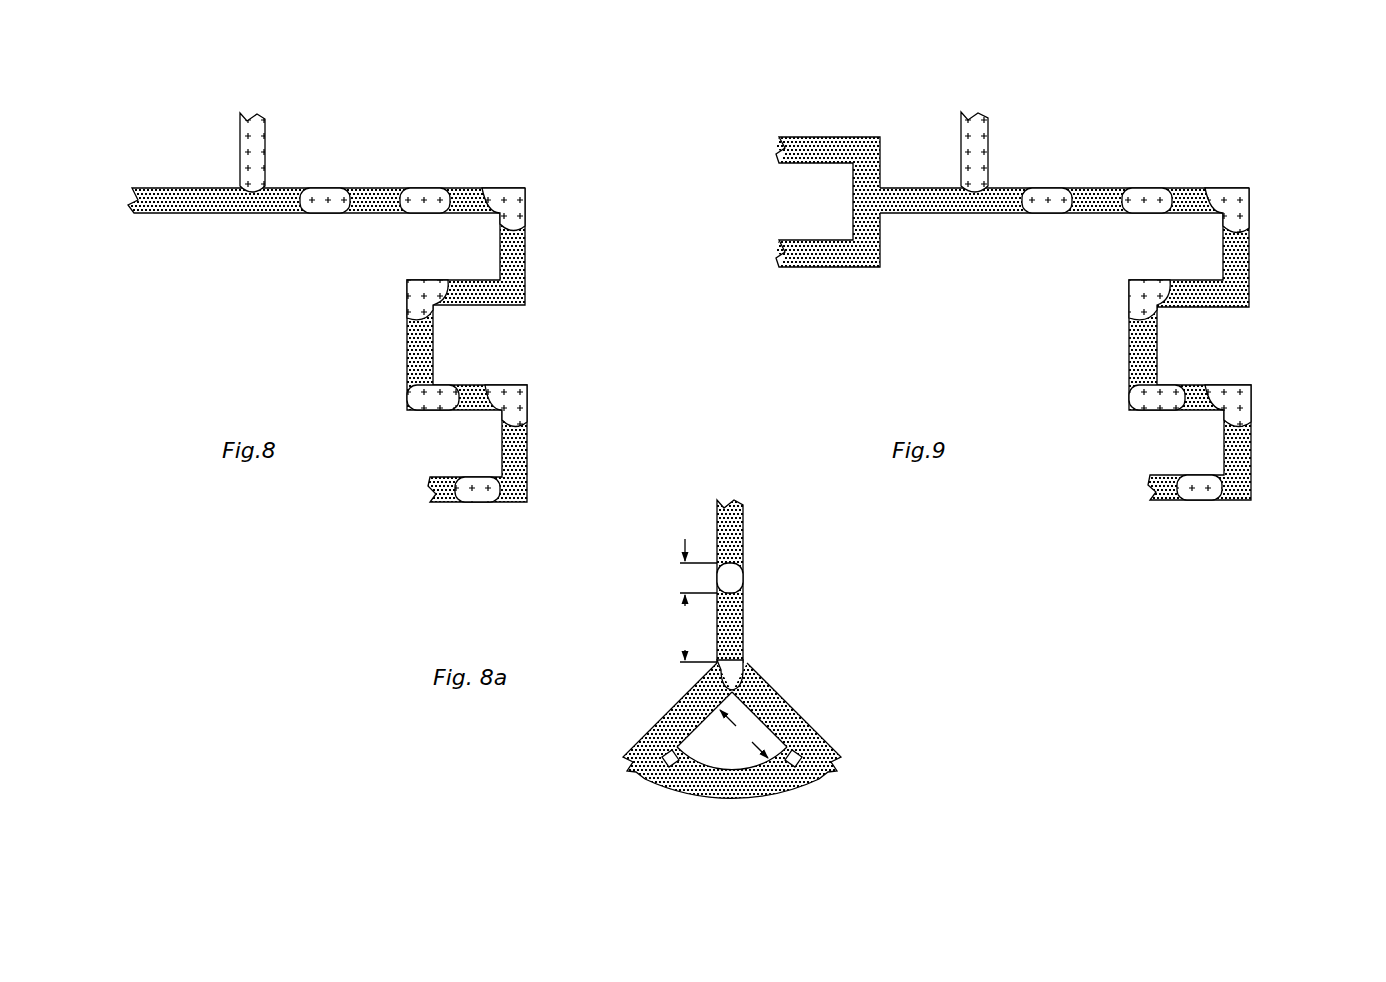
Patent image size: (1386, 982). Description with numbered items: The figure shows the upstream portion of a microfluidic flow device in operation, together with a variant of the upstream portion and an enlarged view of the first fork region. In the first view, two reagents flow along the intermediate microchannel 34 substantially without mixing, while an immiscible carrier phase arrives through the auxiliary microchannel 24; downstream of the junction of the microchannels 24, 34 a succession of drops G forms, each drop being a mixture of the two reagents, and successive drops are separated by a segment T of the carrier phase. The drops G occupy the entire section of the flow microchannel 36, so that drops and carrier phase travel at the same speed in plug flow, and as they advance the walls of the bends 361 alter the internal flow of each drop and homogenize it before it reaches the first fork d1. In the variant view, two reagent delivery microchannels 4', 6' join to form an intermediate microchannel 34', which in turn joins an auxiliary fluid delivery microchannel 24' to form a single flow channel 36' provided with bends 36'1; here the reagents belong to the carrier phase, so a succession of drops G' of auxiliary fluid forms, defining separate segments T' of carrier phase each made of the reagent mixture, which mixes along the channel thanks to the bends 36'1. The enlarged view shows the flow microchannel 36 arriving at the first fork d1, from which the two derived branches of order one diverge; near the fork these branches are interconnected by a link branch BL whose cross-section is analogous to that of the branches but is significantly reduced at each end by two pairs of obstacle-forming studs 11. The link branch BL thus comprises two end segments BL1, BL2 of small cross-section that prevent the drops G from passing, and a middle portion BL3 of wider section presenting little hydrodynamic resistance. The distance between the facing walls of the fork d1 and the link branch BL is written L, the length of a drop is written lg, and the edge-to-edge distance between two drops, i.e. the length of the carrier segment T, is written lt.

In FIG. 8, the auxiliary fluid delivery microchannel 24 is at (326, 237).
In FIG. 8, the intermediate microchannel 34 is at (286, 142).
In FIG. 8, the flow microchannel 36 is at (504, 323).
In FIG. 8A, the flow microchannel 36 is at (762, 580).
In FIG. 8, the bends of the flow microchannel 361 is at (529, 306).
In FIG. 8, the segment of carrier phase T is at (470, 295).
In FIG. 8, the drop G is at (443, 345).
In FIG. 8A, the drop G is at (730, 626).
In FIG. 9, the reagent delivery microchannel 4' is at (828, 101).
In FIG. 9, the reagent delivery microchannel 6' is at (828, 255).
In FIG. 9, the auxiliary fluid delivery microchannel 24' is at (1019, 141).
In FIG. 9, the intermediate microchannel 34' is at (1064, 227).
In FIG. 9, the flow channel 36' is at (1249, 344).
In FIG. 9, the bends of the flow channel 36'1 is at (1290, 421).
In FIG. 9, the drop G' is at (1136, 323).
In FIG. 9, the segment of carrier phase T' is at (1138, 298).
In FIG. 8A, the length of a drop lg is at (692, 572).
In FIG. 8A, the length of the carrier phase segment lt is at (692, 637).
In FIG. 8A, the first fork d1 is at (749, 667).
In FIG. 8A, the link branch BL is at (736, 820).
In FIG. 8A, the first end segment of the link branch BL1 is at (660, 775).
In FIG. 8A, the second end segment of the link branch BL2 is at (806, 778).
In FIG. 8A, the middle portion of the link branch BL3 is at (718, 795).
In FIG. 8A, the obstacle-forming studs 11 is at (668, 770).
In FIG. 8A, the distance between fork and link branch L is at (744, 734).